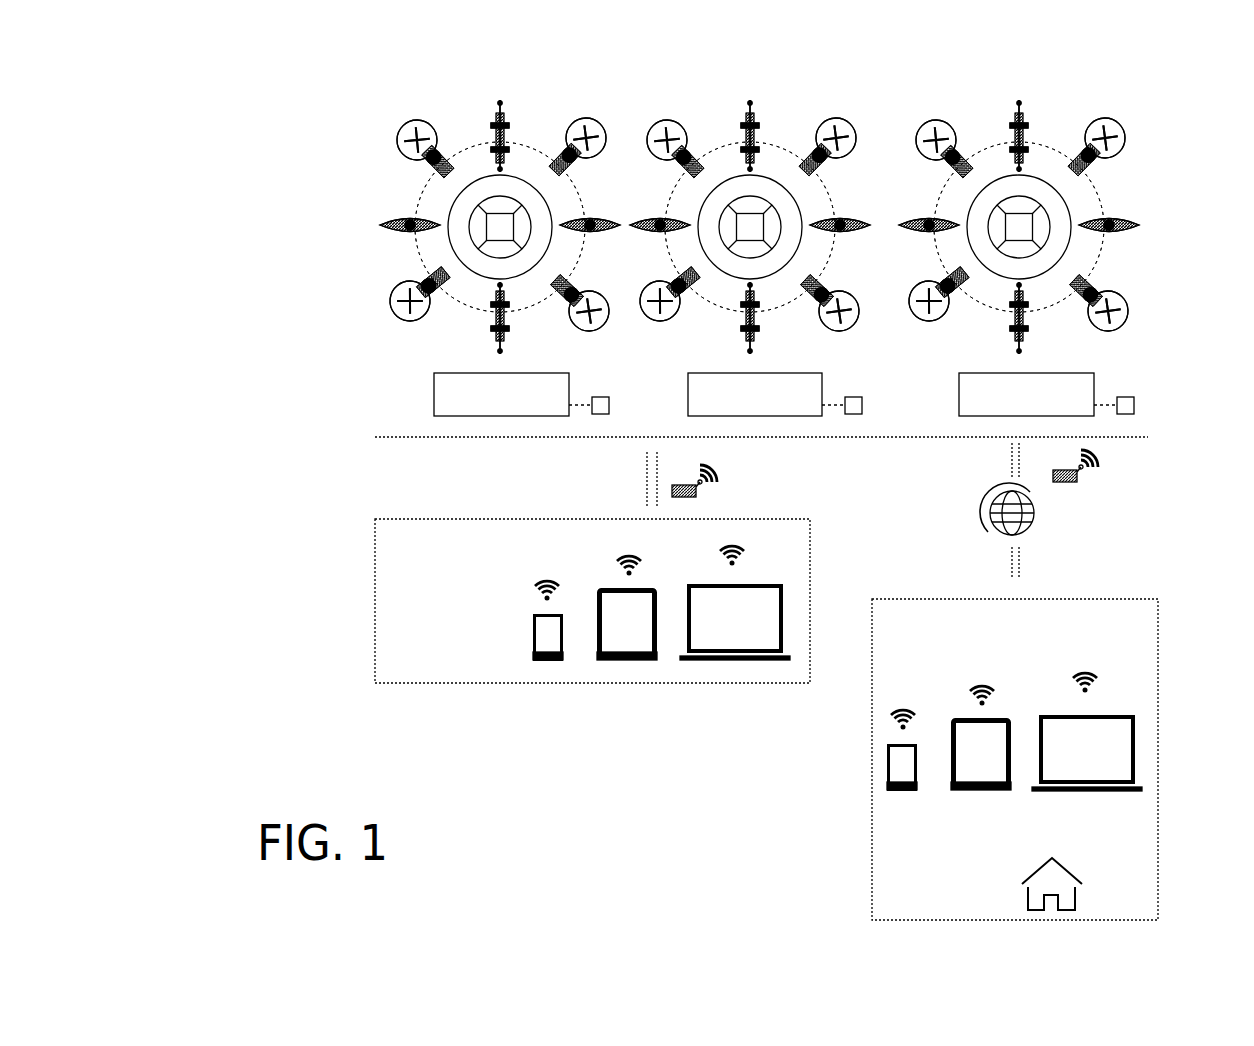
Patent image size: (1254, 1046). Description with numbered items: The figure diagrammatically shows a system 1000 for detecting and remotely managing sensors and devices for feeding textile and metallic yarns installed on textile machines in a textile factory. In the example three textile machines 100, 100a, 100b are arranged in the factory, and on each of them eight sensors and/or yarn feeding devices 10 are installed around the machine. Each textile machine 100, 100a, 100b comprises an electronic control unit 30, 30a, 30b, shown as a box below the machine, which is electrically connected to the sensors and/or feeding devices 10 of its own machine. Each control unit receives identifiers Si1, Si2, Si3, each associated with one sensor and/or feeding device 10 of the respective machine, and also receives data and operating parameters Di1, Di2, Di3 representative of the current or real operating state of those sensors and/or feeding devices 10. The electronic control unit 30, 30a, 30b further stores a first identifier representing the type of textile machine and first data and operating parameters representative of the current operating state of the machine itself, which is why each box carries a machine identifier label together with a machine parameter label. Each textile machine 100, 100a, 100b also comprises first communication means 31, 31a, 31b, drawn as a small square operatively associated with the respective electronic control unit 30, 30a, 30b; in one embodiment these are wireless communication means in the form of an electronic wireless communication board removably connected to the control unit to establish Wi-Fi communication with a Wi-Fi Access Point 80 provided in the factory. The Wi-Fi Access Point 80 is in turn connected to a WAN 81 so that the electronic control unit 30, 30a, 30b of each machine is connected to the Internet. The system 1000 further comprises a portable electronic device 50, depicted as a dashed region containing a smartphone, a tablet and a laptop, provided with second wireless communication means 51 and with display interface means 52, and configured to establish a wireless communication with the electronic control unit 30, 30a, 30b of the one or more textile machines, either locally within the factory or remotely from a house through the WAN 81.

The system for detecting and remotely managing sensors and/or yarn feeding devices 1000 is at (234, 605).
The textile machine 100 is at (495, 80).
The textile machine 100a is at (743, 78).
The textile machine 100b is at (983, 80).
The sensor and/or yarn feeding device 10 is at (405, 130).
The electronic control unit 30 is at (432, 399).
The electronic control unit 30a is at (688, 400).
The electronic control unit 30b is at (959, 400).
The first communication means 31 is at (594, 422).
The first communication means 31a is at (867, 426).
The first communication means 31b is at (1150, 405).
The identifiers Si1 is at (450, 345).
The data and operating parameters Di1 is at (553, 345).
The identifiers Si2 is at (702, 345).
The data and operating parameters Di2 is at (802, 345).
The identifiers Si3 is at (973, 345).
The data and operating parameters Di3 is at (1070, 345).
The Wi-Fi Access Point 80 is at (705, 490).
The WAN (Wide Area Network) 81 is at (1026, 533).
The portable electronic device 50 is at (375, 608).
The second wireless communication means 51 is at (745, 561).
The display interface means 52 is at (630, 625).